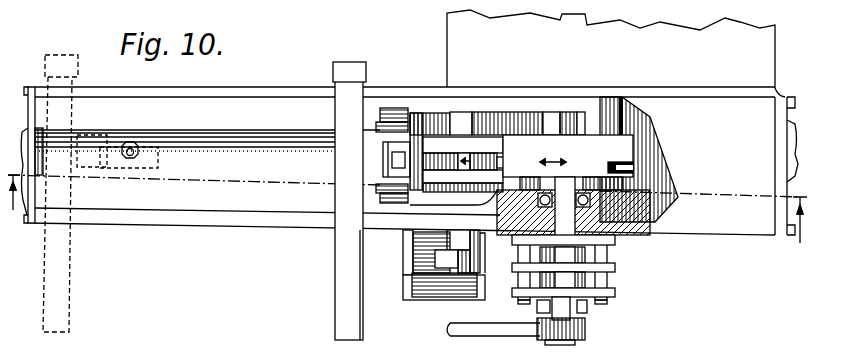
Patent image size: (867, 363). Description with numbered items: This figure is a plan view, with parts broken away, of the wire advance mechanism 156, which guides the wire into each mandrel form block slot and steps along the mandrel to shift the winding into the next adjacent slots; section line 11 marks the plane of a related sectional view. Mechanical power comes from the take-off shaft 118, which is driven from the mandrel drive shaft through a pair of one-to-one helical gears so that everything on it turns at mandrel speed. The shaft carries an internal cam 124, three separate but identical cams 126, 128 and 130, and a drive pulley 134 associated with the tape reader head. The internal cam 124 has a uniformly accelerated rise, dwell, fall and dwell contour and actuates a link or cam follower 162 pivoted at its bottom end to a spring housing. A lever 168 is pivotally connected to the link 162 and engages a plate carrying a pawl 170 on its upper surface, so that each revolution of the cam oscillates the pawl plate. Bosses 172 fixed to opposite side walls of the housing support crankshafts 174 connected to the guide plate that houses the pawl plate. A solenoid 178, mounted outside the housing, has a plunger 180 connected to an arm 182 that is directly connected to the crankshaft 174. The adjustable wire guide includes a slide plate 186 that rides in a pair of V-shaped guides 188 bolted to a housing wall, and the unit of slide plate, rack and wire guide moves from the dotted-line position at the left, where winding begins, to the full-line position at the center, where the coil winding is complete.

The section line XI-XI 11 is at (407, 222).
The take-off shaft 118 is at (570, 175).
The internal cam 124 is at (493, 196).
The cam 126 is at (613, 253).
The cam 128 is at (613, 277).
The cam 130 is at (612, 310).
The drive pulley 134 is at (587, 337).
The wire advance mechanism 156 is at (382, 38).
The link or cam follower 162 is at (637, 165).
The lever 168 is at (597, 165).
The pawl 170 is at (470, 162).
The bosses 172 is at (458, 122).
The crankshafts 174 is at (480, 133).
The solenoid 178 is at (404, 262).
The plunger 180 is at (430, 262).
The arm 182 is at (462, 270).
The slide plate 186 is at (383, 120).
The V-shaped guides 188 is at (224, 124).